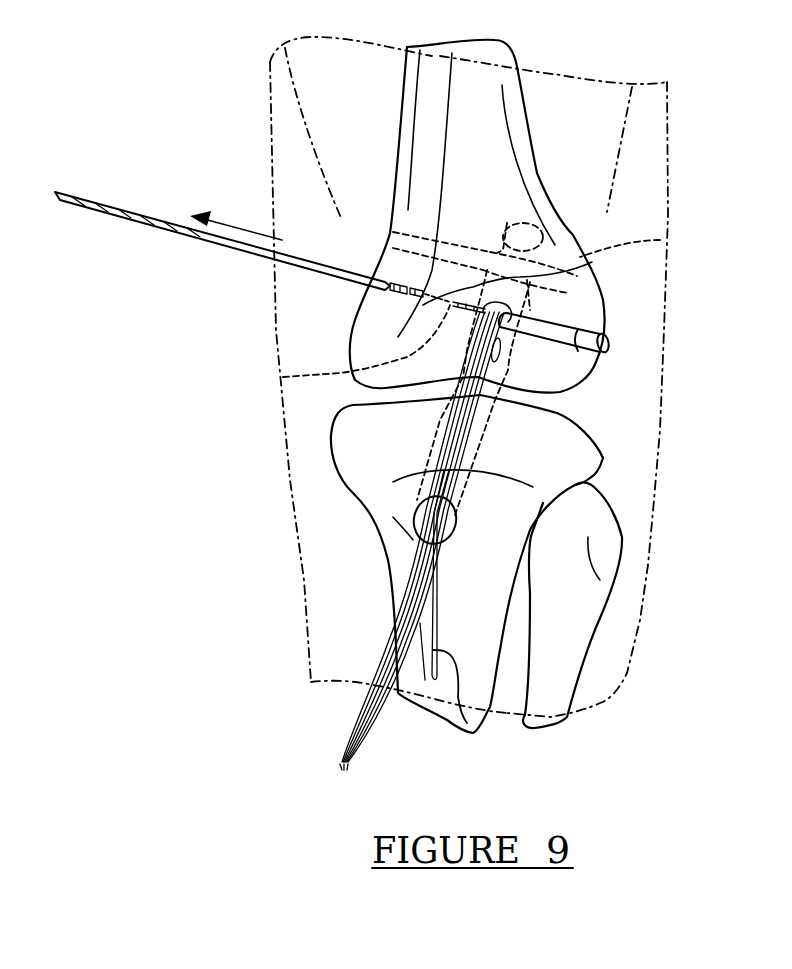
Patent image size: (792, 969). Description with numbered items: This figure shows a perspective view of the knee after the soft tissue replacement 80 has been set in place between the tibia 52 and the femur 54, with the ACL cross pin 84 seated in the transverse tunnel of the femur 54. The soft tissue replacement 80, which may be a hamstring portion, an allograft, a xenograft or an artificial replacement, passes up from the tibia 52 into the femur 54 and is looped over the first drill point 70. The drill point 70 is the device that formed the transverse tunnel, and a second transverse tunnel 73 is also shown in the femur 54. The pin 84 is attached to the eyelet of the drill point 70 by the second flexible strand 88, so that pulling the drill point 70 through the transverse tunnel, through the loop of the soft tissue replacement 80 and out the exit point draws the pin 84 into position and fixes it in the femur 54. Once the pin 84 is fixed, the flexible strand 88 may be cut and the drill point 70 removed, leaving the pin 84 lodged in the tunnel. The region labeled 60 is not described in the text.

The tibia 52 is at (597, 460).
The femur 54 is at (543, 210).
The tibial tunnel 60 is at (473, 733).
The first drill bit or point 70 is at (173, 222).
The second transverse tunnel 73 is at (665, 244).
The soft tissue replacement 80 is at (392, 670).
The ACL cross pin 84 is at (607, 317).
The second flexible strand 88 is at (275, 378).